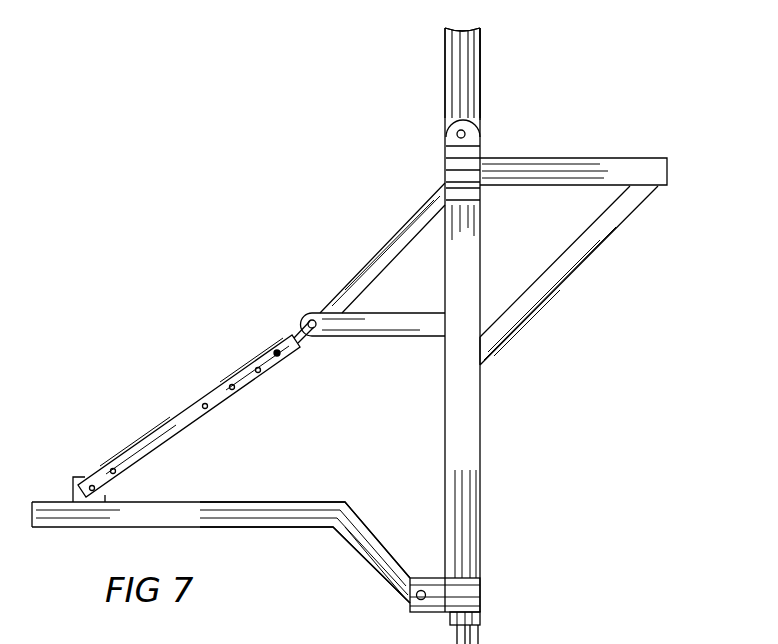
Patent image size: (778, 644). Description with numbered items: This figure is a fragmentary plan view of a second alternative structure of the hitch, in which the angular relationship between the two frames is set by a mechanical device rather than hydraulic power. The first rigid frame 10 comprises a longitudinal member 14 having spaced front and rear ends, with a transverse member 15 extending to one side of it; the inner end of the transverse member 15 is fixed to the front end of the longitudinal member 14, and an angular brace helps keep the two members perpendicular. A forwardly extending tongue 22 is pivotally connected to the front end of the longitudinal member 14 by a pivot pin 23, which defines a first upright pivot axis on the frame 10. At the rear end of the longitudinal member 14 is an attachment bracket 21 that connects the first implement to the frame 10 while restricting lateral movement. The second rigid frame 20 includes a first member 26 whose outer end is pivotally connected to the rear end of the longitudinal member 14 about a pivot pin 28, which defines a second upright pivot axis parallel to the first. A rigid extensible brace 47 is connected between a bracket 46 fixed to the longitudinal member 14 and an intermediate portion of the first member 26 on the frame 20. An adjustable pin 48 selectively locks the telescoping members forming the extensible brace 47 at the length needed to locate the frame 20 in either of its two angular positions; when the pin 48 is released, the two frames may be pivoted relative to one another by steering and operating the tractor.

The first rigid frame 10 is at (481, 45).
The longitudinal member 14 is at (482, 499).
The transverse member 15 is at (645, 157).
The second rigid frame 20 is at (232, 500).
The attachment bracket 21 is at (480, 634).
The tongue 22 is at (445, 97).
The pivot pin 23 is at (468, 134).
The first member 26 is at (318, 500).
The pivot pin 28 is at (408, 603).
The bracket 46 is at (385, 246).
The rigid extensible brace 47 is at (214, 410).
The adjustable pin 48 is at (290, 362).